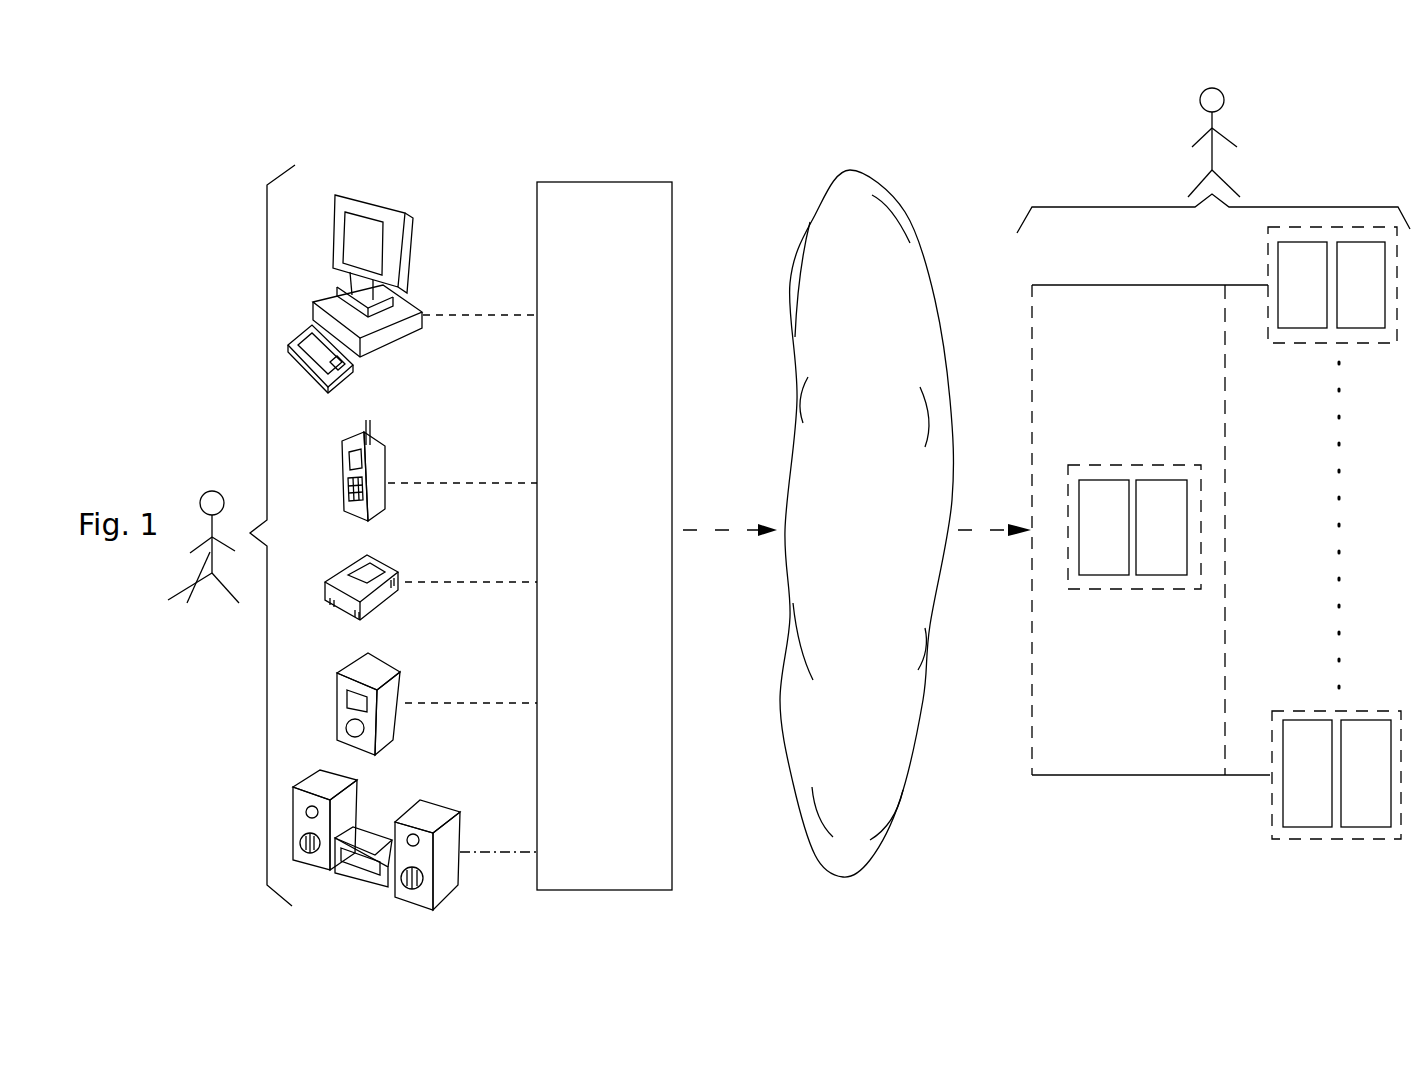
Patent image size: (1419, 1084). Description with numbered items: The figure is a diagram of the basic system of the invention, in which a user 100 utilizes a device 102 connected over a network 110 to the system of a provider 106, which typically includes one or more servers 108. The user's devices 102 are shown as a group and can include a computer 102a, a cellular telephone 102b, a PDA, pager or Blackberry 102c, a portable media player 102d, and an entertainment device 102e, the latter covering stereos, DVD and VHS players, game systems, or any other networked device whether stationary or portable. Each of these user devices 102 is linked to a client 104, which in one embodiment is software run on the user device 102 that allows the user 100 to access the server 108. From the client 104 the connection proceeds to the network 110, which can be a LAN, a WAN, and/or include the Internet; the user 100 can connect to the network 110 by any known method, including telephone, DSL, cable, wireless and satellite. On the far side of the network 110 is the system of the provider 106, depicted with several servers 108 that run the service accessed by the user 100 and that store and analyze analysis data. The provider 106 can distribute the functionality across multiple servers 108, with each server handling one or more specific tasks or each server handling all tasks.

The user 100 is at (188, 561).
The device 102 is at (412, 175).
The computer 102a is at (373, 320).
The cellular telephone 102b is at (375, 480).
The PDA/pager/Blackberry 102c is at (372, 578).
The portable media player 102d is at (390, 705).
The entertainment device 102e is at (423, 817).
The client 104 is at (590, 283).
The provider 106 is at (1230, 136).
The server 108 is at (1308, 273).
The network 110 is at (858, 312).